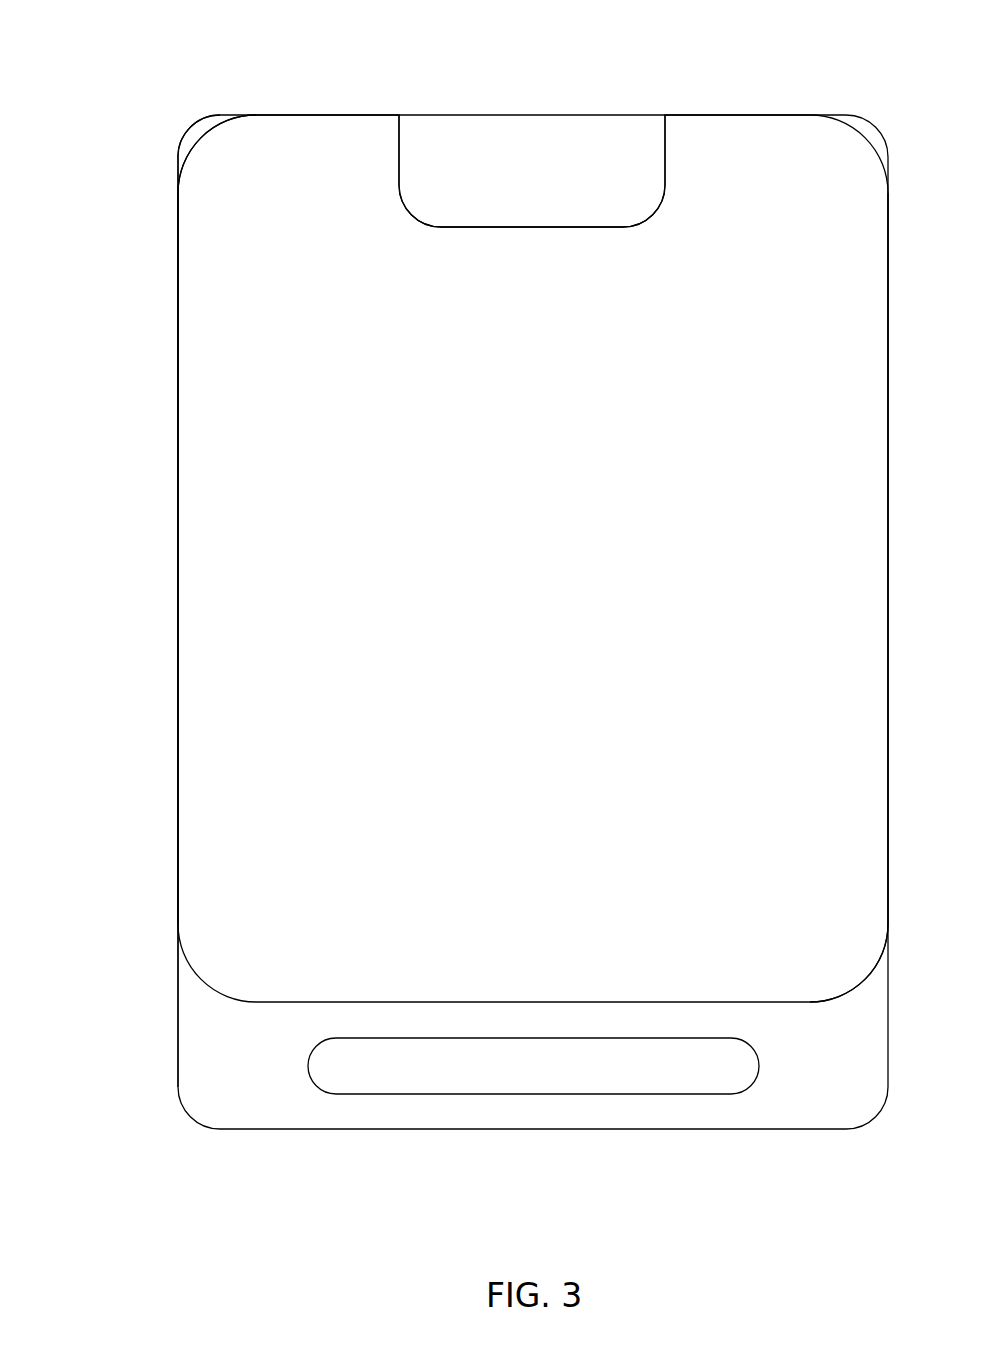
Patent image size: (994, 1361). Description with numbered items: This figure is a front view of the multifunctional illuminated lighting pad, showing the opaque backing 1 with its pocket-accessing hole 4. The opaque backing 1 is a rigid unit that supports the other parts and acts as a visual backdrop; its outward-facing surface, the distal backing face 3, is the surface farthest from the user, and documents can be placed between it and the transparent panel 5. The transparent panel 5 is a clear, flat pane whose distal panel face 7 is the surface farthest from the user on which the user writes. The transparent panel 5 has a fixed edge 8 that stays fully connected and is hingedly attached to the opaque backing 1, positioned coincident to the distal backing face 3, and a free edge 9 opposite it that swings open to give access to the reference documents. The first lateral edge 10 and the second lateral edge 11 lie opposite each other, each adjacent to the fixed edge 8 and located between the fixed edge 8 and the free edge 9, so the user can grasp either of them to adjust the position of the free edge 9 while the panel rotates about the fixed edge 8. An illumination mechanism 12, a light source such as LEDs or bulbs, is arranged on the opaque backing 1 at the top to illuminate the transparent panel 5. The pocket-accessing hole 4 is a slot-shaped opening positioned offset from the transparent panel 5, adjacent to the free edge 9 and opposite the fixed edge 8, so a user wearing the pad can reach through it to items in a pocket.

The opaque backing 1 is at (788, 1166).
The distal backing face 3 is at (193, 137).
The pocket-accessing hole 4 is at (304, 1093).
The transparent panel 5 is at (133, 601).
The distal panel face 7 is at (540, 583).
The fixed edge 8 is at (348, 153).
The free edge 9 is at (758, 938).
The first lateral edge 10 is at (254, 515).
The second lateral edge 11 is at (835, 515).
The illumination mechanism 12 is at (531, 138).